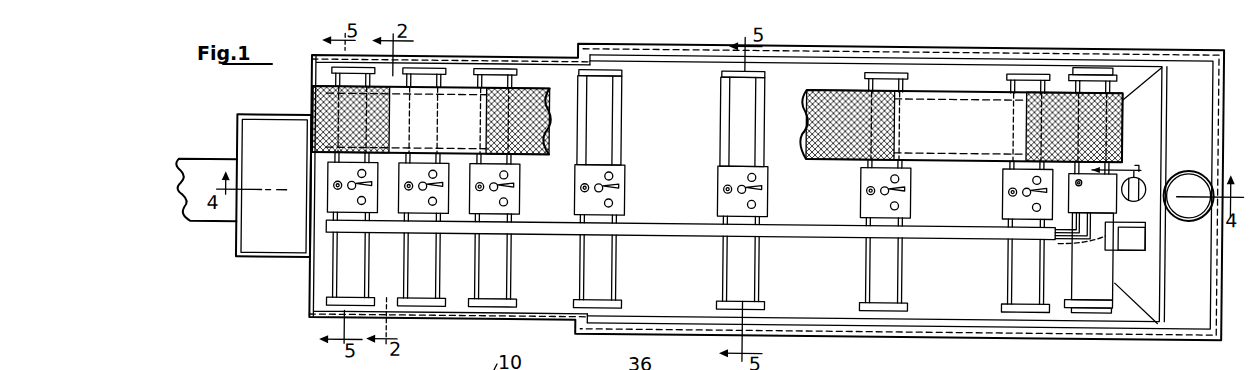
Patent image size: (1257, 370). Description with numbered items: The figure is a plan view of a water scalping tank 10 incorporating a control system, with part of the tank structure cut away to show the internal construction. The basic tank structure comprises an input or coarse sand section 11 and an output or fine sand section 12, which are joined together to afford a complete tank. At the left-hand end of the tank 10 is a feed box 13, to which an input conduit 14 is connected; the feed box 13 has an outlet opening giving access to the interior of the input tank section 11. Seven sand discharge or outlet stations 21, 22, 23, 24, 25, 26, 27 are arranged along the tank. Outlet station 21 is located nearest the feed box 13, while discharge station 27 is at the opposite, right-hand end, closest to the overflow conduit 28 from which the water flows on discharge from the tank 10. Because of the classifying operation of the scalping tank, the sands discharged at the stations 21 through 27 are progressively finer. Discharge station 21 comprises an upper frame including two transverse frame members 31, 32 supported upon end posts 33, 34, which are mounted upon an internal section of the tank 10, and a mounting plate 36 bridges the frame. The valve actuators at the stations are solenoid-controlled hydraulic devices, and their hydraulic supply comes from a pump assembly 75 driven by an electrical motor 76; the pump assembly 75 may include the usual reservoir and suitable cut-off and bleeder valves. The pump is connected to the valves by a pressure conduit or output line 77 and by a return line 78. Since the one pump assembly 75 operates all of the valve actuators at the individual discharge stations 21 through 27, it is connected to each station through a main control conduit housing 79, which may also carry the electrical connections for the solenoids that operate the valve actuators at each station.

The water scalping tank 10 is at (540, 48).
The input or coarse sand section 11 is at (462, 58).
The output or fine sand section 12 is at (978, 50).
The feed box 13 is at (262, 257).
The input conduit 14 is at (203, 158).
The sand discharge or outlet station 21 is at (353, 236).
The sand discharge or outlet station 22 is at (424, 236).
The sand discharge or outlet station 23 is at (495, 236).
The sand discharge or outlet station 24 is at (600, 236).
The sand discharge or outlet station 25 is at (749, 189).
The sand discharge or outlet station 26 is at (886, 236).
The sand discharge or outlet station 27 is at (1028, 236).
The overflow conduit 28 is at (1182, 213).
The transverse frame member 31 is at (731, 117).
The transverse frame member 32 is at (760, 140).
The end post 33 is at (766, 72).
The end post 34 is at (767, 305).
The mounting plate 36 is at (765, 187).
The pump assembly 75 is at (1097, 195).
The electrical motor 76 is at (1148, 176).
The pressure conduit or output line 77 is at (1100, 228).
The return line 78 is at (1061, 238).
The main control conduit housing 79 is at (965, 232).